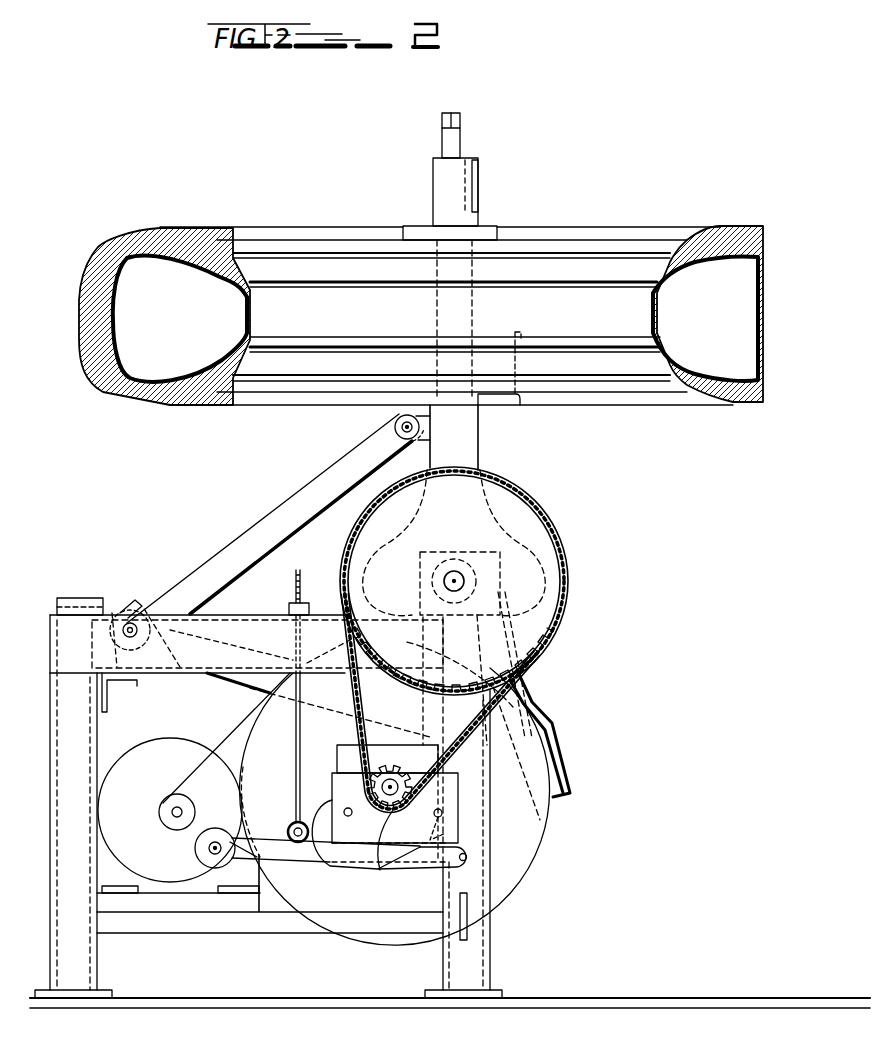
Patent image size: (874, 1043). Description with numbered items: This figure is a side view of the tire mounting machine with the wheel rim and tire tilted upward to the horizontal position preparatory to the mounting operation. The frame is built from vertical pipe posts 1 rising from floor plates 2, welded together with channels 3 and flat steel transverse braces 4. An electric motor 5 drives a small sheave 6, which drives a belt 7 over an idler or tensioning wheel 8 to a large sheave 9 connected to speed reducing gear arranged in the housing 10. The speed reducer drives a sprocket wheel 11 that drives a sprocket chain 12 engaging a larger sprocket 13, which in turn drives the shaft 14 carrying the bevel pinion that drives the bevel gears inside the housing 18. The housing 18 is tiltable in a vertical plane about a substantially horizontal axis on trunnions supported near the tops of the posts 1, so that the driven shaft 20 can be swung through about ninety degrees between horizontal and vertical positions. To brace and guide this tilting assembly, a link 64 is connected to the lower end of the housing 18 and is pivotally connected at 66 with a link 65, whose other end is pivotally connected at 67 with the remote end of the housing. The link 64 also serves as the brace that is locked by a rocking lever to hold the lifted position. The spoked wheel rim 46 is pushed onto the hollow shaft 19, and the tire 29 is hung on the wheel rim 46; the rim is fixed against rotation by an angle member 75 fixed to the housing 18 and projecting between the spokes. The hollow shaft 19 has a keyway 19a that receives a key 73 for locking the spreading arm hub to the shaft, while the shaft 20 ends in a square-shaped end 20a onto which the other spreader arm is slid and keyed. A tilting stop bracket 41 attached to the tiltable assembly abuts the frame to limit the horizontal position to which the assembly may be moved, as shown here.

The pipe posts 1 is at (58, 725).
The floor plates 2 is at (494, 991).
The channels 3 is at (233, 627).
The transverse braces 4 is at (185, 927).
The electric motor 5 is at (152, 758).
The small sheave 6 is at (165, 820).
The belt 7 is at (237, 736).
The idler or tensioning wheel 8 is at (202, 860).
The sheave 9 is at (513, 878).
The housing 10 is at (358, 830).
The sprocket wheel 11 is at (410, 869).
The sprocket chain 12 is at (455, 745).
The sprocket 13 is at (535, 536).
The shaft 14 is at (464, 581).
The housing 18 is at (476, 447).
The hollow shaft 19 is at (437, 188).
The keyway 19a is at (480, 178).
The shaft 20 is at (446, 150).
The shaped end 20a is at (462, 120).
The tire 29 is at (737, 236).
The tilting stop bracket 41 is at (560, 781).
The wheel rim 46 is at (563, 258).
The link 64 is at (245, 681).
The link 65 is at (290, 498).
The pivot 66 is at (122, 612).
The pivot 67 is at (394, 427).
The key 73 is at (480, 206).
The angle member 75 is at (520, 404).